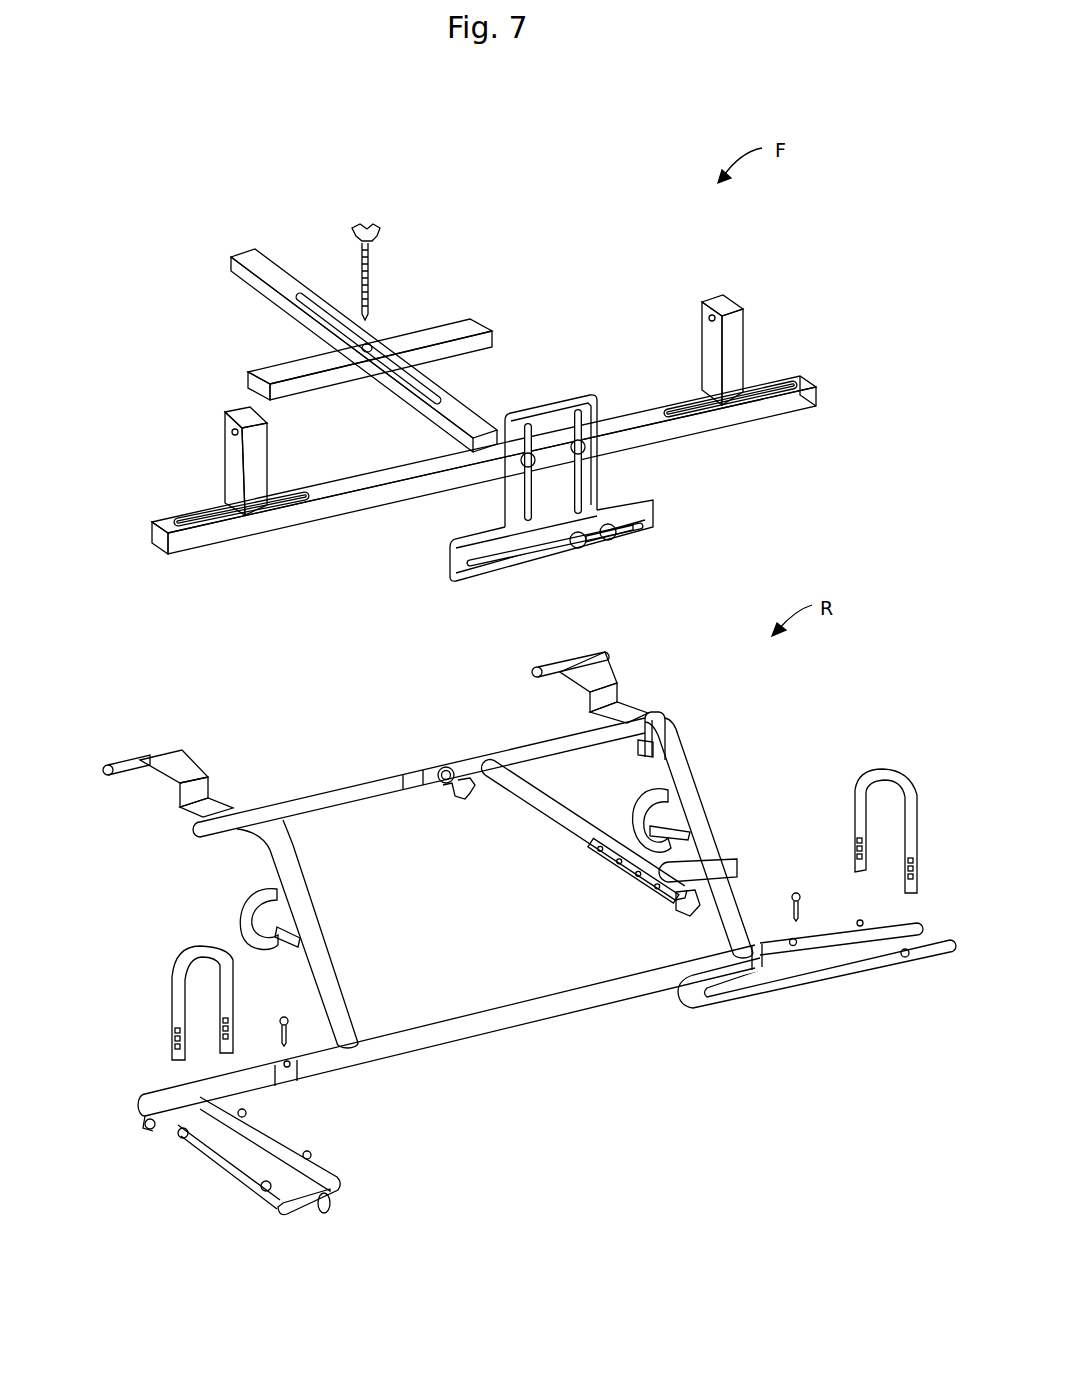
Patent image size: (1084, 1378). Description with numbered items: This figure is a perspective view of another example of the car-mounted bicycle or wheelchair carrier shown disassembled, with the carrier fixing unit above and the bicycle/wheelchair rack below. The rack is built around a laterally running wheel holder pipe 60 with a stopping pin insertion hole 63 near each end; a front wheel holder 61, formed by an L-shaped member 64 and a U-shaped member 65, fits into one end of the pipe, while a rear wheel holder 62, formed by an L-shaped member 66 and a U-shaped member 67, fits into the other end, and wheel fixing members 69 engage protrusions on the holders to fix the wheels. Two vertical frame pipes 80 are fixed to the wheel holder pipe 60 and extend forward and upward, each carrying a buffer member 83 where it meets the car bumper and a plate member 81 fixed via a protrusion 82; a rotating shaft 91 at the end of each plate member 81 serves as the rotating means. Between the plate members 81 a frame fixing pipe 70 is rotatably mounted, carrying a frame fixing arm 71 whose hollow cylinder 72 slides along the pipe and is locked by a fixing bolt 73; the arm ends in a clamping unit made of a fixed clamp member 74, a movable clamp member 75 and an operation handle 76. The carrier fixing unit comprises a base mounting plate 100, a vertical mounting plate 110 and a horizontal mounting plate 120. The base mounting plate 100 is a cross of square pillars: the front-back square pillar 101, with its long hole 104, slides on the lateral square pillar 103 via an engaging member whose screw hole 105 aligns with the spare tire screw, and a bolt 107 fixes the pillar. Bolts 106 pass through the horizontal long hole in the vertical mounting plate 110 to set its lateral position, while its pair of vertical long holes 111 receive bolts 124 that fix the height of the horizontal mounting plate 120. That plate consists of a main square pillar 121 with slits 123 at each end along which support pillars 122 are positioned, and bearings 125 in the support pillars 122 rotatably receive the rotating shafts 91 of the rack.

The wheel holder pipe 60 is at (414, 1038).
The front wheel holder 61 is at (313, 1164).
The rear wheel holder 62 is at (818, 997).
The stopping pin insertion hole 63 is at (307, 1062).
The L-shaped member 64 is at (140, 1098).
The U-shaped member 65 is at (352, 1187).
The L-shaped member 66 is at (915, 924).
The U-shaped member 67 is at (824, 978).
The wheel fixing member 69 is at (917, 810).
The frame fixing pipe 70 is at (333, 791).
The frame fixing arm 71 is at (560, 828).
The hollow cylinder 72 is at (474, 760).
The fixing bolt 73 is at (468, 803).
The fixed clamp member 74 is at (738, 866).
The movable clamp member 75 is at (646, 800).
The operation handle 76 is at (673, 917).
The vertical frame pipe 80 is at (698, 800).
The plate member 81 is at (620, 682).
The protrusion 82 is at (662, 726).
The buffer member 83 is at (240, 903).
The rotating shaft 91 is at (533, 672).
The base mounting plate 100 is at (460, 262).
The square pillar 101 is at (351, 350).
The square pillar 103 is at (494, 342).
The long hole 104 is at (447, 392).
The screw hole 105 is at (373, 340).
The bolt 106 is at (630, 547).
The bolt 107 is at (380, 240).
The vertical mounting plate 110 is at (595, 501).
The vertical long hole 111 is at (512, 515).
The horizontal mounting plate 120 is at (735, 354).
The main square pillar 121 is at (384, 468).
The support pillar 122 is at (224, 460).
The slit 123 is at (290, 516).
The bolt 124 is at (590, 450).
The bearing 125 is at (706, 317).